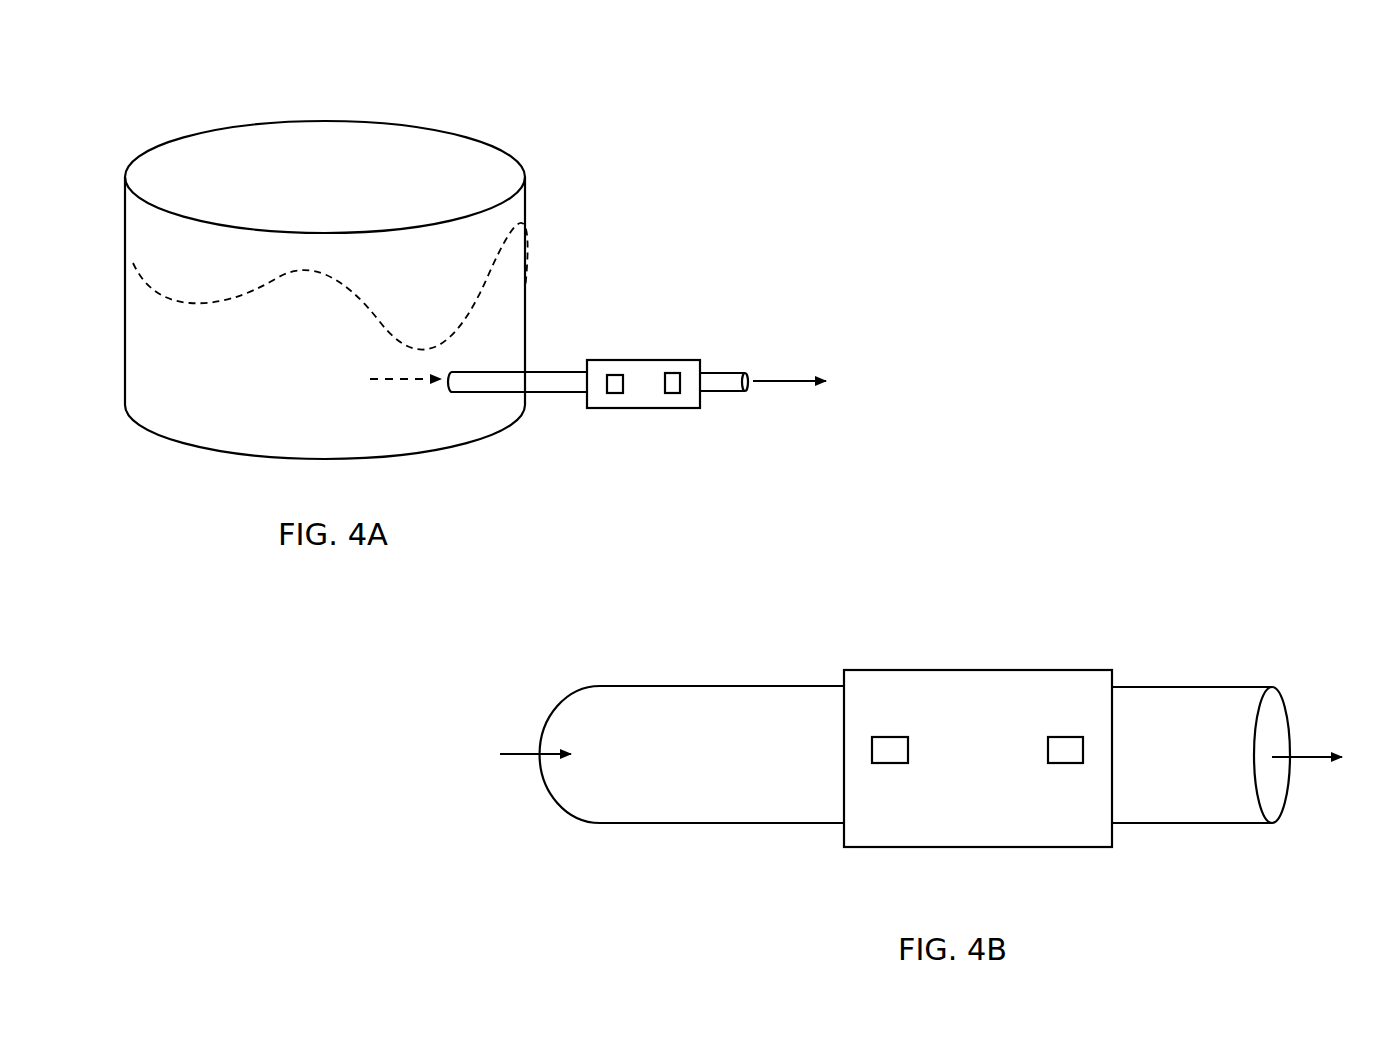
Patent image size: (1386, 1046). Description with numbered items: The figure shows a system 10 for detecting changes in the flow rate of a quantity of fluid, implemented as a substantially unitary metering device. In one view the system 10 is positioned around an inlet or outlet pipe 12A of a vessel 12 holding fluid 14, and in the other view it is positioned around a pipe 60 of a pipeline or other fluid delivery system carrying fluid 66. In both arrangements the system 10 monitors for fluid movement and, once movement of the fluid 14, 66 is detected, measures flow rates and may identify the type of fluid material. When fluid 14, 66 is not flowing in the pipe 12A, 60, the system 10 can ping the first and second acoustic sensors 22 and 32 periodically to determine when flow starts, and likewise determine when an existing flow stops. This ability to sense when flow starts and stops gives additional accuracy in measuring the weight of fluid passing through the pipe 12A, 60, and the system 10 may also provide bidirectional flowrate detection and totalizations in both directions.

In FIG. 4A, the system 10 is at (637, 362).
In FIG. 4B, the system 10 is at (997, 668).
In FIG. 4A, the vessel 12 is at (408, 125).
In FIG. 4A, the inlet or outlet pipe 12A is at (567, 382).
In FIG. 4A, the fluid 14 is at (487, 338).
In FIG. 4A, the first acoustic sensor 22 is at (673, 377).
In FIG. 4B, the first acoustic sensor 22 is at (1065, 750).
In FIG. 4A, the second acoustic sensor 32 is at (613, 387).
In FIG. 4B, the second acoustic sensor 32 is at (890, 747).
In FIG. 4B, the pipe 60 is at (682, 720).
In FIG. 4B, the fluid 66 is at (530, 747).